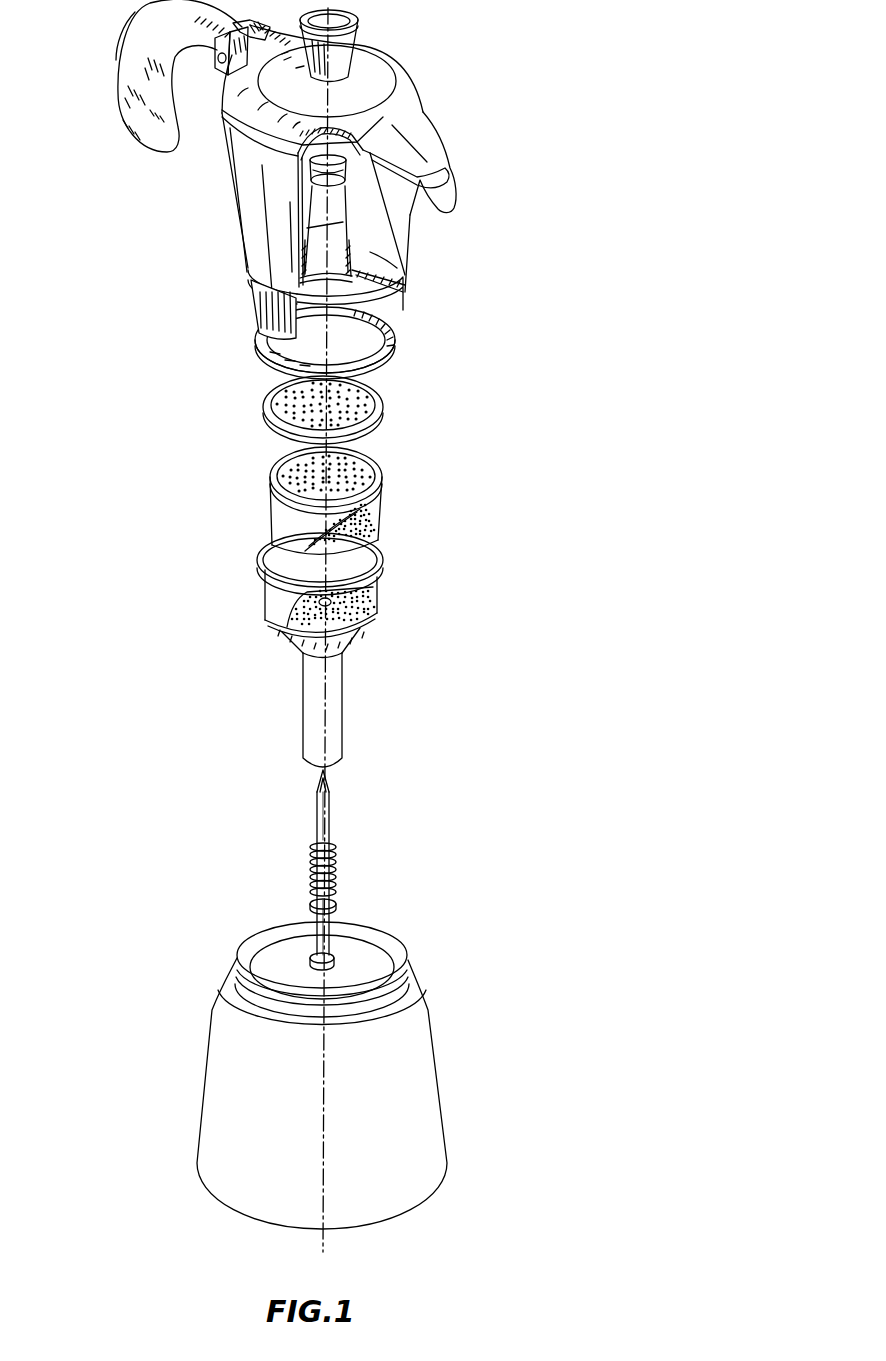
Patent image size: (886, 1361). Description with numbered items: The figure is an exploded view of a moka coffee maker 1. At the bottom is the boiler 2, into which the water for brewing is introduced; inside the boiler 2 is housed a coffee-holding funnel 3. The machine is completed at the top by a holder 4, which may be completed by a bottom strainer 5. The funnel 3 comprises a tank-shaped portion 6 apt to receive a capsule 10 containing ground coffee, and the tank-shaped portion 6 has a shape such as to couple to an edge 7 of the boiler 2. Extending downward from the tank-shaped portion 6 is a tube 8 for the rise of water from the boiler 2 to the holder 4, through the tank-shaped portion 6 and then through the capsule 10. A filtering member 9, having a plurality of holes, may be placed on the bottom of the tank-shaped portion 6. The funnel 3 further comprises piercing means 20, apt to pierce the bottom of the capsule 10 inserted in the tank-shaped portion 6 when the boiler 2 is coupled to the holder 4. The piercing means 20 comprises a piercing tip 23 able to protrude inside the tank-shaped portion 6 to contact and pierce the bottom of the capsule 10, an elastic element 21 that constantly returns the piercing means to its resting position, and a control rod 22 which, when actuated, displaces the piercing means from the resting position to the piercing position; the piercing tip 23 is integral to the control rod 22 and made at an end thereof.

The moka coffee maker 1 is at (429, 626).
The boiler 2 is at (425, 1108).
The coffee-holding funnel 3 is at (396, 661).
The holder 4 is at (286, 189).
The bottom strainer 5 is at (400, 405).
The tank-shaped portion 6 is at (402, 581).
The edge 7 is at (405, 950).
The tube 8 is at (335, 705).
The filtering member 9 is at (370, 612).
The capsule 10 is at (420, 503).
The piercing means 20 is at (327, 862).
The elastic element 21 is at (350, 885).
The control rod 22 is at (326, 931).
The piercing tip 23 is at (302, 785).